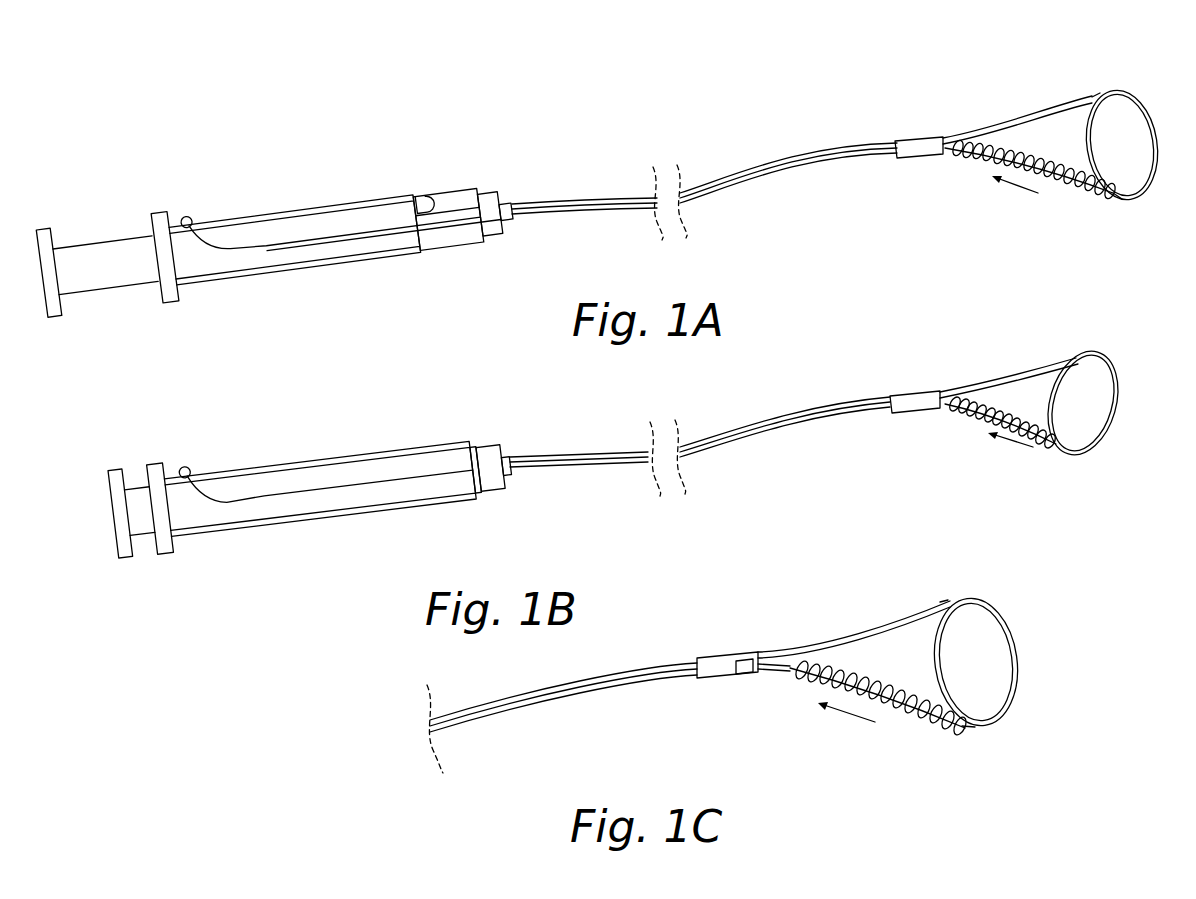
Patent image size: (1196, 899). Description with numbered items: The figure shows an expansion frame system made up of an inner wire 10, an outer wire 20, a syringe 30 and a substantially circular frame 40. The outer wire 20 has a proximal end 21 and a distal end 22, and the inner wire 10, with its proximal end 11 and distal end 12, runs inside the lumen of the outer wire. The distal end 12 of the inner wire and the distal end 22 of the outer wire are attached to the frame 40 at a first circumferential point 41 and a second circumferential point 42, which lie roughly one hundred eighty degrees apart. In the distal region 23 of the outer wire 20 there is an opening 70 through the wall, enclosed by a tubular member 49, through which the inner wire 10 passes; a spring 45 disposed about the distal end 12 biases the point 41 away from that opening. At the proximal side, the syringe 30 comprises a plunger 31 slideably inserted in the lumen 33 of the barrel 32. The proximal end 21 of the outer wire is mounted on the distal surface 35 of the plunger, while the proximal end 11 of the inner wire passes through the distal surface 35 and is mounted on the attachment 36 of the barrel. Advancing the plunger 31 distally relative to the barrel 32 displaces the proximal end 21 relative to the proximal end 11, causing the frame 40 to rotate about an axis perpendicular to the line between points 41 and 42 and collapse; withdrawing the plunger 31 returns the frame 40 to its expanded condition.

In FIG. 1A, the inner wire 10 is at (623, 210).
In FIG. 1B, the inner wire 10 is at (611, 466).
In FIG. 1C, the inner wire 10 is at (783, 672).
In FIG. 1A, the proximal end of inner wire 11 is at (185, 222).
In FIG. 1B, the proximal end of inner wire 11 is at (183, 470).
In FIG. 1A, the distal end of inner wire 12 is at (1070, 190).
In FIG. 1B, the distal end of inner wire 12 is at (1043, 444).
In FIG. 1C, the distal end of inner wire 12 is at (918, 720).
In FIG. 1A, the outer wire 20 is at (611, 197).
In FIG. 1B, the outer wire 20 is at (563, 453).
In FIG. 1A, the proximal end of outer wire 21 is at (435, 210).
In FIG. 1B, the proximal end of outer wire 21 is at (471, 440).
In FIG. 1A, the distal end of outer wire 22 is at (1073, 100).
In FIG. 1B, the distal end of outer wire 22 is at (1028, 376).
In FIG. 1C, the distal end of outer wire 22 is at (897, 624).
In FIG. 1A, the distal region of outer wire 23 is at (1032, 147).
In FIG. 1C, the distal region of outer wire 23 is at (888, 661).
In FIG. 1A, the syringe 30 is at (275, 245).
In FIG. 1B, the syringe 30 is at (310, 497).
In FIG. 1A, the plunger 31 is at (118, 288).
In FIG. 1B, the plunger 31 is at (148, 538).
In FIG. 1A, the barrel 32 is at (420, 248).
In FIG. 1B, the barrel 32 is at (300, 522).
In FIG. 1A, the lumen of barrel 33 is at (467, 242).
In FIG. 1B, the lumen of barrel 33 is at (480, 489).
In FIG. 1A, the distal surface of plunger 35 is at (420, 212).
In FIG. 1A, the attachment of barrel 36 is at (192, 216).
In FIG. 1B, the attachment of barrel 36 is at (188, 468).
In FIG. 1A, the substantially circular frame 40 is at (1153, 98).
In FIG. 1B, the substantially circular frame 40 is at (1103, 433).
In FIG. 1C, the substantially circular frame 40 is at (1022, 633).
In FIG. 1A, the first circumferential point 41 is at (1123, 199).
In FIG. 1C, the first circumferential point 41 is at (982, 727).
In FIG. 1A, the second circumferential point 42 is at (1097, 94).
In FIG. 1C, the second circumferential point 42 is at (944, 600).
In FIG. 1A, the spring 45 is at (957, 152).
In FIG. 1B, the spring 45 is at (948, 407).
In FIG. 1C, the spring 45 is at (800, 675).
In FIG. 1A, the tubular member 49 is at (905, 159).
In FIG. 1B, the tubular member 49 is at (897, 412).
In FIG. 1C, the tubular member 49 is at (729, 671).
In FIG. 1C, the opening 70 is at (748, 658).